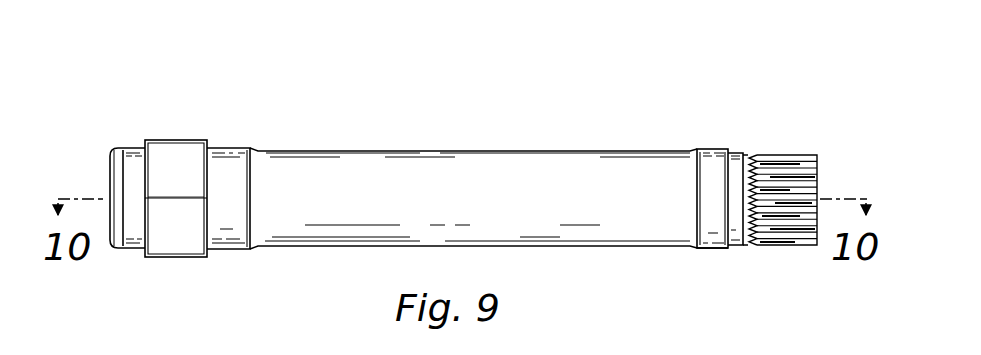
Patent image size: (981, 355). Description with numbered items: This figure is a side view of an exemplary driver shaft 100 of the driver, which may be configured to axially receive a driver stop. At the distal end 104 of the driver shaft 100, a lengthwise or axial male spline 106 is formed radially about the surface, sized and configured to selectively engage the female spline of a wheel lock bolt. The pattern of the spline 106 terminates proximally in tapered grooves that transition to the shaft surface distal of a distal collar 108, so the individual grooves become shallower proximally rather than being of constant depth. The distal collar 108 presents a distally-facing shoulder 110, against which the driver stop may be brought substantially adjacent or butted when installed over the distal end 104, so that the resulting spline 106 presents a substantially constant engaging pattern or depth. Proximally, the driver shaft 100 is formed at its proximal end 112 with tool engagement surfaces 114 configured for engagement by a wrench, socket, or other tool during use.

The driver shaft 100 is at (435, 68).
The distal end 104 is at (780, 96).
The male spline 106 is at (790, 155).
The distal collar 108 is at (738, 122).
The distally-facing shoulder 110 is at (726, 250).
The proximal end 112 is at (167, 88).
The tool engagement surfaces 114 is at (178, 160).